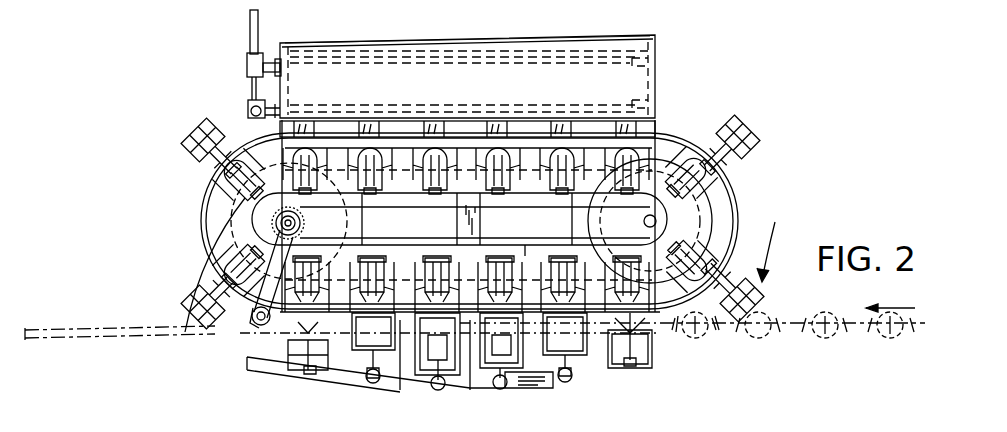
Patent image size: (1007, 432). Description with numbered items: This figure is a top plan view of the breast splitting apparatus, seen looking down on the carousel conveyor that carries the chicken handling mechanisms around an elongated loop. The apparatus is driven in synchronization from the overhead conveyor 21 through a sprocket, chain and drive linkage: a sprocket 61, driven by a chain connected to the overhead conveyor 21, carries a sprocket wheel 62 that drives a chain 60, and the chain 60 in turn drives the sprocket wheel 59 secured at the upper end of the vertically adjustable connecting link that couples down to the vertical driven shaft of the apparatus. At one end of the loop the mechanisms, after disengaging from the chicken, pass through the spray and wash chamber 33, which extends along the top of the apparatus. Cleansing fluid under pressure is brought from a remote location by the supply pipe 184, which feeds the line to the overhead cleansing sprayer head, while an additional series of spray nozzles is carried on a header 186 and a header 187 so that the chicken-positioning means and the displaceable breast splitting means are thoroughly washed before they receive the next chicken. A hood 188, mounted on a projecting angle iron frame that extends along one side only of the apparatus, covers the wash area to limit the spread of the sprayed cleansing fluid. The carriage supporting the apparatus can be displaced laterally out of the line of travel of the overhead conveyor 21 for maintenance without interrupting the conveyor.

The overhead conveyor 21 is at (822, 428).
The spray and wash chamber 33 is at (658, 76).
The sprocket wheel 59 is at (296, 230).
The chain 60 is at (282, 248).
The sprocket 61 is at (248, 326).
The sprocket wheel 62 is at (263, 326).
The supply pipe 184 is at (250, 19).
The header 186 is at (271, 60).
The header 187 is at (267, 106).
The hood 188 is at (553, 34).